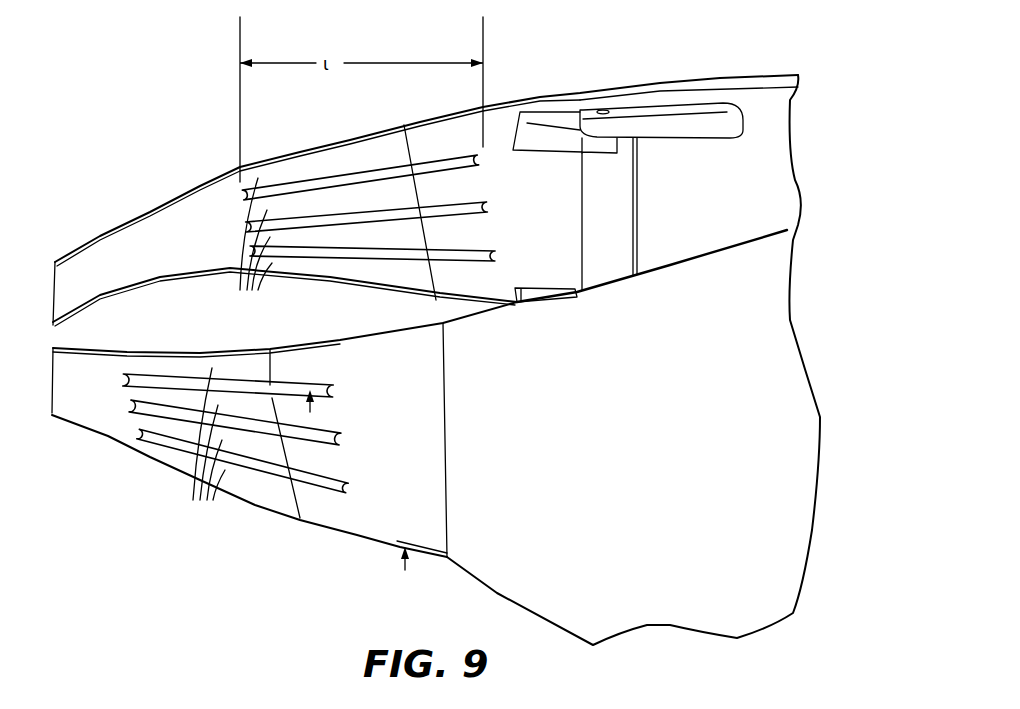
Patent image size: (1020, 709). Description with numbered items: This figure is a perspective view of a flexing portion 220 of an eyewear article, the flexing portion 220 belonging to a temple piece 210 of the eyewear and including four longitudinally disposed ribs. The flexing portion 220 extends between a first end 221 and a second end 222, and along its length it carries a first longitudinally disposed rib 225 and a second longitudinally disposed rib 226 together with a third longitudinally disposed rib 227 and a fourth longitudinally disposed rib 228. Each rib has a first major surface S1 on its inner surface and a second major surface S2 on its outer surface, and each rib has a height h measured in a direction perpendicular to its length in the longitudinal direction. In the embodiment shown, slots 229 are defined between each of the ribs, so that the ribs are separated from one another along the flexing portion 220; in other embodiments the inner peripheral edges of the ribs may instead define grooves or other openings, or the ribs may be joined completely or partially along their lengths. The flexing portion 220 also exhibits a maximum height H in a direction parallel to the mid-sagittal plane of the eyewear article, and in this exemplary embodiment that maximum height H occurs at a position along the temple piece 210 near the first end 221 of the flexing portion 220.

The temple piece 210 is at (135, 140).
The flexing portion 220 is at (289, 146).
The first end 221 is at (475, 128).
The second end 222 is at (238, 180).
The first longitudinally disposed rib 225 is at (128, 358).
The second longitudinally disposed rib 226 is at (158, 397).
The third longitudinally disposed rib 227 is at (147, 424).
The fourth longitudinally disposed rib 228 is at (173, 433).
The slots 229 is at (205, 436).
The first major surface S1 is at (252, 253).
The second major surface S2 is at (206, 449).
The height h is at (300, 339).
The maximum height H is at (372, 330).